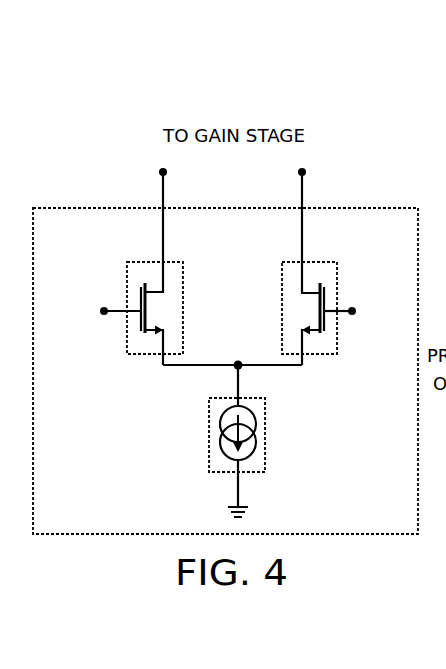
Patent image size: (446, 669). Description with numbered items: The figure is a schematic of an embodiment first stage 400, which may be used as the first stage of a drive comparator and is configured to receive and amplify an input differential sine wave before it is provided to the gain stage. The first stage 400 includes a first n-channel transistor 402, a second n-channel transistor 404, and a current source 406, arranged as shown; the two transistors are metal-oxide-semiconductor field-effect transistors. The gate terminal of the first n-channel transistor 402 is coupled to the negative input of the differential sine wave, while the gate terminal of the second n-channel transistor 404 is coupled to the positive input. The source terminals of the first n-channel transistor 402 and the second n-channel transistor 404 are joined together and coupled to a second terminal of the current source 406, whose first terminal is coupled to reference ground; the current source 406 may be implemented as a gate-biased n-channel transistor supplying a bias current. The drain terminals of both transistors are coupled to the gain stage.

The first stage 400 is at (350, 89).
The first n-channel transistor 402 is at (140, 355).
The second n-channel transistor 404 is at (318, 355).
The current source 406 is at (210, 473).